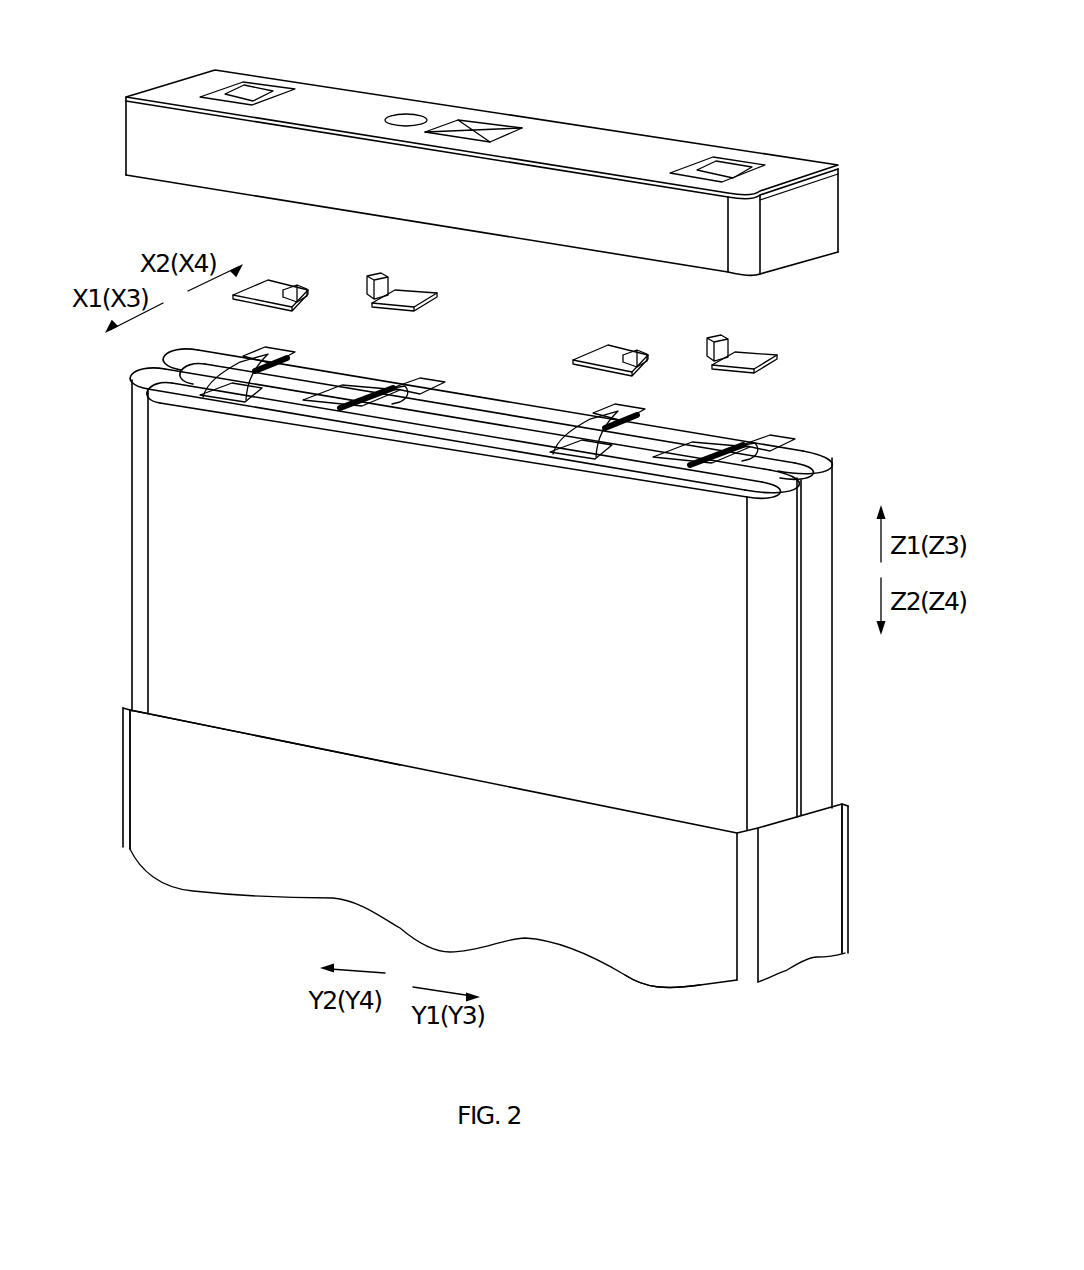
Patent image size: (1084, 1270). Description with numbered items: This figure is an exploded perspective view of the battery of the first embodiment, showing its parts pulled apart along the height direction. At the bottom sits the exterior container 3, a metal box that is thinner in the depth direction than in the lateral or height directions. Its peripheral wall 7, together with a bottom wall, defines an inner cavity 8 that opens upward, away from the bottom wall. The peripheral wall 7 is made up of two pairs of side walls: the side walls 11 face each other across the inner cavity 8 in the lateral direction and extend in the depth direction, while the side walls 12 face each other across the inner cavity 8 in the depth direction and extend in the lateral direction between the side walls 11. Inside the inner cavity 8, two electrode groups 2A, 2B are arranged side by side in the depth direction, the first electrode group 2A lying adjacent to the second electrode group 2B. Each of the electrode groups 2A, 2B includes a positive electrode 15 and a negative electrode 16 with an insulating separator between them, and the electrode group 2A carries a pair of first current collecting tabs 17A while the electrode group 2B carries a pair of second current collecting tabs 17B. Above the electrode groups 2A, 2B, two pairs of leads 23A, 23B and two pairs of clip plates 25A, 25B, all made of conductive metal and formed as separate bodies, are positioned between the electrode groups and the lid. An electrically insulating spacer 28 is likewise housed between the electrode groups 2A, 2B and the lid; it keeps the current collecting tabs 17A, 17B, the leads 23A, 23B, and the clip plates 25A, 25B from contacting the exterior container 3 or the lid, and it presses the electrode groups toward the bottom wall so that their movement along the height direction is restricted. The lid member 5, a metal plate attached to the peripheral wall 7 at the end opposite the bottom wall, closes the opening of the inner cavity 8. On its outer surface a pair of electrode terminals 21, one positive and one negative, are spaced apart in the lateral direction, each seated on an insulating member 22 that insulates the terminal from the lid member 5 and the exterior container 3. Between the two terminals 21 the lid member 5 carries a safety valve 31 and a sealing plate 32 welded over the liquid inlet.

The first electrode group 2A is at (775, 760).
The second electrode group 2B is at (818, 713).
The exterior container 3 is at (873, 850).
The lid member 5 is at (590, 140).
The peripheral wall 7 is at (663, 968).
The inner cavity 8 is at (217, 713).
The side walls 11 is at (123, 773).
The side walls 12 is at (848, 915).
The positive electrode 15 is at (587, 449).
The negative electrode 16 is at (216, 392).
The first current collecting tabs 17A is at (240, 383).
The second current collecting tabs 17B is at (378, 384).
The electrode terminals 21 is at (250, 92).
The insulating member 22 is at (282, 92).
The leads 23A is at (292, 270).
The leads 23B is at (425, 280).
The clip plates 25A is at (262, 358).
The clip plates 25B is at (333, 402).
The spacer 28 is at (803, 243).
The safety valve 31 is at (462, 121).
The sealing plate 32 is at (406, 116).